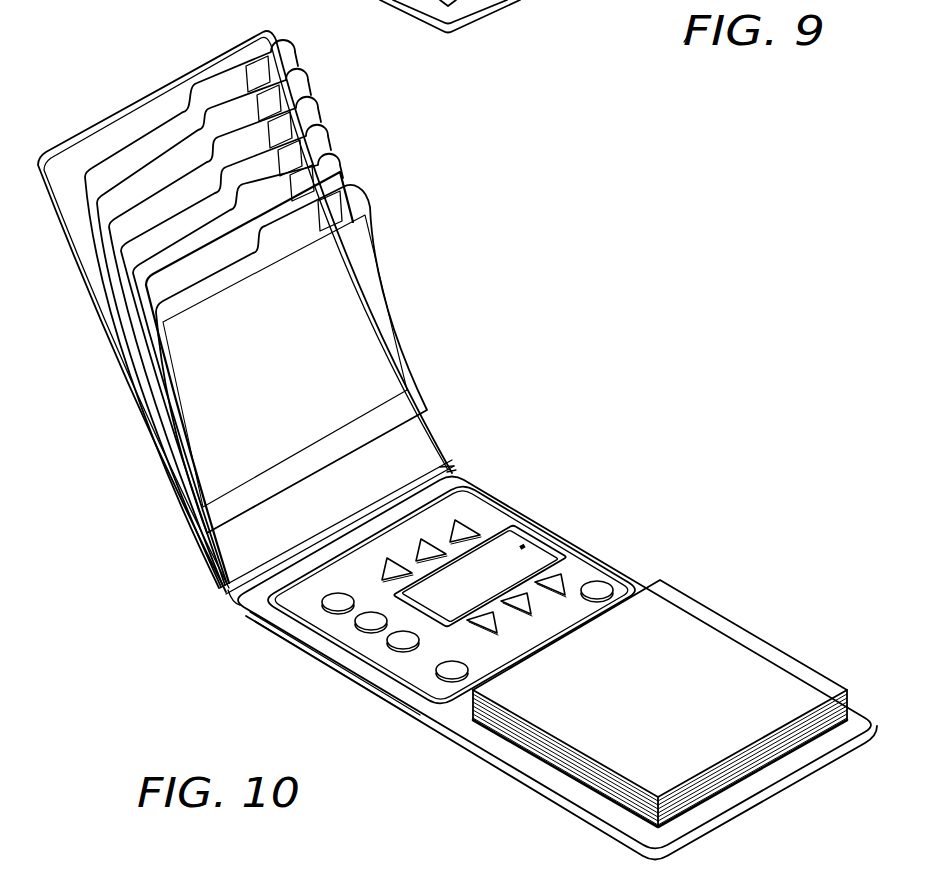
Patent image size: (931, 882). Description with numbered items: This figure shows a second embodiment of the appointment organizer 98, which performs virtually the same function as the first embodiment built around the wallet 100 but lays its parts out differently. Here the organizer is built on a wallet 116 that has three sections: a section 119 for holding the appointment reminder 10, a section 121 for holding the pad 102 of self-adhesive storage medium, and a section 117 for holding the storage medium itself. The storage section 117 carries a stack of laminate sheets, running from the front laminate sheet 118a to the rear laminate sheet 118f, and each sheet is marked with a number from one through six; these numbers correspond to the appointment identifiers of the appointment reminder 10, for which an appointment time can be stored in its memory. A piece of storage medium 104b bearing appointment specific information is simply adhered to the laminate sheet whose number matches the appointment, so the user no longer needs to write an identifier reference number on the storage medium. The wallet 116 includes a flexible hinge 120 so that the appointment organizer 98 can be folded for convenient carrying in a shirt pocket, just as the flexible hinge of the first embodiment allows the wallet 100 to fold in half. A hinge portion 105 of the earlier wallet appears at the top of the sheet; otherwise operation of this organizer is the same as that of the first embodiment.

In FIG. 10, the appointment organizer 98 is at (646, 326).
In FIG. 10, the appointment reminder 10 is at (496, 512).
In FIG. 9, the wallet 100 is at (521, 2).
In FIG. 9, the hinge portion 105 is at (651, 21).
In FIG. 10, the pad 102 is at (733, 638).
In FIG. 10, the index divider sheet 104b is at (343, 176).
In FIG. 10, the wallet 116 is at (268, 622).
In FIG. 10, the section 117 is at (140, 461).
In FIG. 10, the laminate sheet 118a is at (368, 217).
In FIG. 10, the laminate sheet 118f is at (286, 41).
In FIG. 10, the section 119 is at (816, 771).
In FIG. 10, the flexible hinge 120 is at (457, 468).
In FIG. 10, the section 121 is at (369, 687).